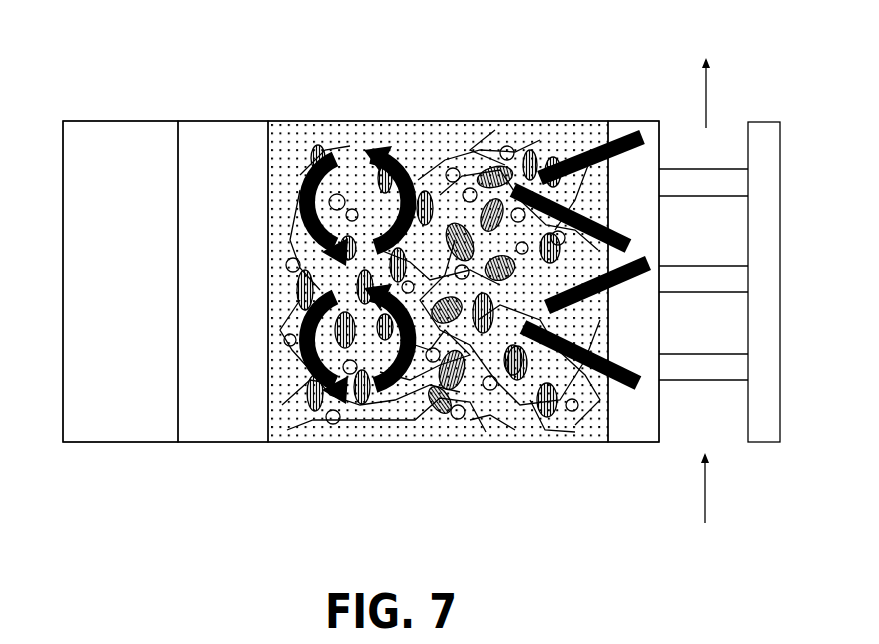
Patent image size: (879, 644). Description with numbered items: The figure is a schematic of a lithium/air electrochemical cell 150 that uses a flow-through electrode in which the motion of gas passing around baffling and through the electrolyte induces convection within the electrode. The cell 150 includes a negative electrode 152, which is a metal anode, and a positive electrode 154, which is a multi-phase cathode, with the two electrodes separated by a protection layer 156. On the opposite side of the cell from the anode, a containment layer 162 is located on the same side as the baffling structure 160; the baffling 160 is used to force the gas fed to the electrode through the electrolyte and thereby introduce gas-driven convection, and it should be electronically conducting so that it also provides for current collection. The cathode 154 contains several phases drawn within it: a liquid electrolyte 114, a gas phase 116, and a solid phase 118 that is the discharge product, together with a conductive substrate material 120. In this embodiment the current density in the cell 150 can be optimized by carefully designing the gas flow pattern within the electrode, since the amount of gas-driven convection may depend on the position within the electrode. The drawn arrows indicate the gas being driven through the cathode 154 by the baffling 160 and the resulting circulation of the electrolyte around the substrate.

The electrochemical cell 150 is at (561, 94).
The negative electrode 152 is at (87, 121).
The protection layer 156 is at (221, 442).
The positive electrode 154 is at (328, 120).
The containment layer 162 is at (629, 443).
The baffling 160 is at (767, 437).
The liquid electrolyte 114 is at (288, 430).
The gas phase 116 is at (448, 407).
The solid phase 118 is at (562, 420).
The conductive substrate material 120 is at (416, 130).